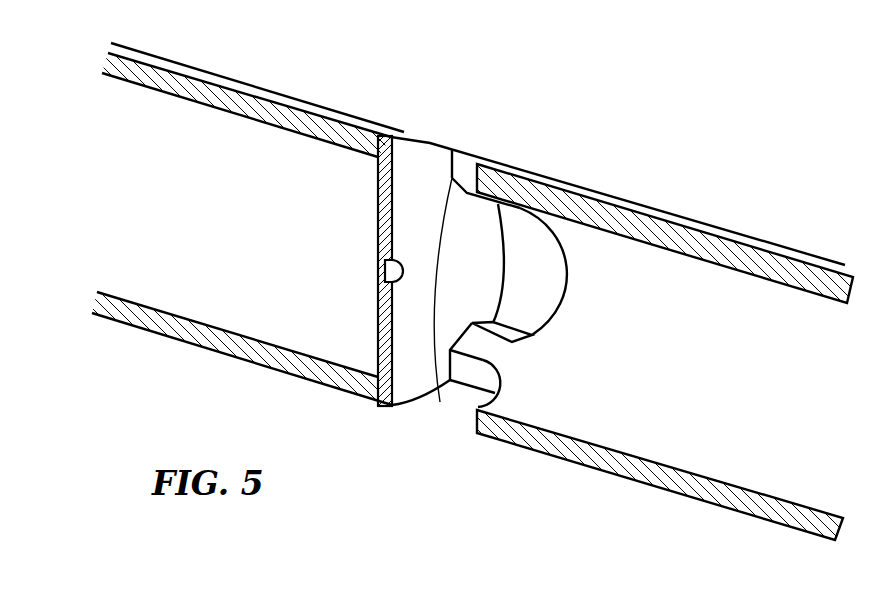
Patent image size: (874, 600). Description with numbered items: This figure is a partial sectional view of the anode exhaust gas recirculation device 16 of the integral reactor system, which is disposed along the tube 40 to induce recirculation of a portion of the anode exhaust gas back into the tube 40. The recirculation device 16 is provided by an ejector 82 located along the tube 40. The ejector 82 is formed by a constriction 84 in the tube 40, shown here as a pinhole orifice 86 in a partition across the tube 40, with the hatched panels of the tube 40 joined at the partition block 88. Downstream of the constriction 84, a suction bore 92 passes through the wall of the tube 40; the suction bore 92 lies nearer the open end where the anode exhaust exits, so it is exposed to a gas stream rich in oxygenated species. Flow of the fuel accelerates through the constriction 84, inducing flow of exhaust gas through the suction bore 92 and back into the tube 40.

The anode exhaust gas recirculation device 16 is at (640, 190).
The tube 40 is at (631, 470).
The ejector 82 is at (437, 462).
The constriction 84 is at (348, 292).
The pinhole orifice 86 is at (385, 270).
The connector block 88 is at (404, 235).
The suction bores 92 is at (540, 290).